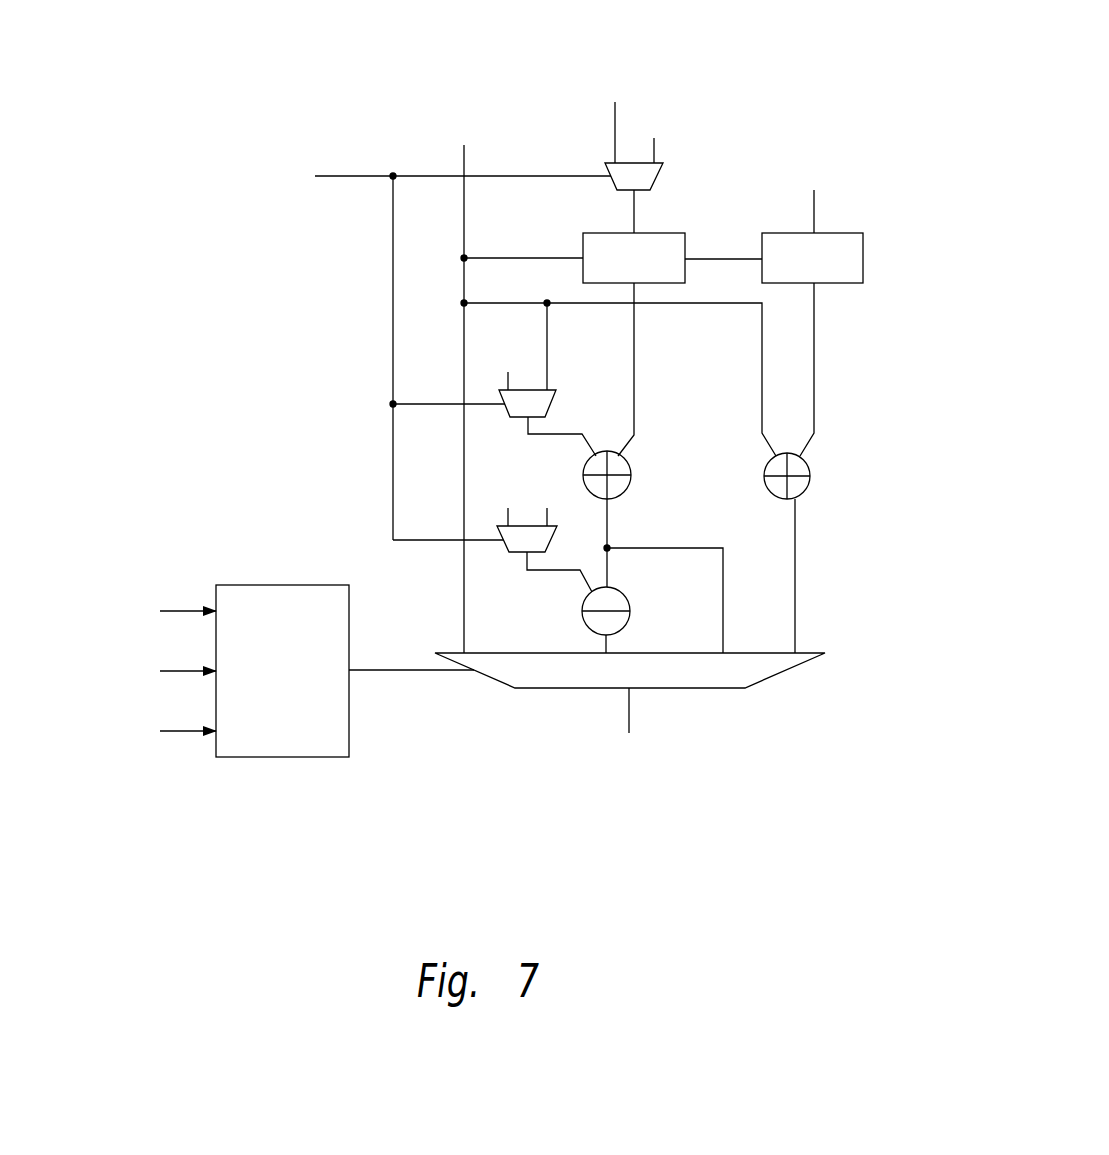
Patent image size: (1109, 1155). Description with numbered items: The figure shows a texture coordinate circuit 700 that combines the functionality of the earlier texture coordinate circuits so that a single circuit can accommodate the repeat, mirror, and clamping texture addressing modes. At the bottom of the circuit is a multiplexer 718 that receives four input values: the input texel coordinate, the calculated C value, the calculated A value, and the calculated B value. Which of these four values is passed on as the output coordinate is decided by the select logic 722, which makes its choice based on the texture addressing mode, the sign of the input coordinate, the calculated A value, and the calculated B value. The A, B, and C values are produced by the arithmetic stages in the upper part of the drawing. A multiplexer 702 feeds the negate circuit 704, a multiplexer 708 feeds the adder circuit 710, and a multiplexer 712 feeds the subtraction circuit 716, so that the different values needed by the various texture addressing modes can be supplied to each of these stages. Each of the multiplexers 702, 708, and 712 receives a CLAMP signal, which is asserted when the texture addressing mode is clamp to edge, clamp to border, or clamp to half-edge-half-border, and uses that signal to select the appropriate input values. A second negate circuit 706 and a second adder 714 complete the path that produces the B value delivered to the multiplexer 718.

The texture coordinate circuit 700 is at (793, 53).
The multiplexer 702 is at (605, 163).
The negate circuit 704 is at (672, 233).
The negate unit 706 is at (850, 233).
The multiplexer 708 is at (557, 406).
The adder circuit 710 is at (632, 466).
The multiplexer 712 is at (505, 553).
The adder B 714 is at (810, 467).
The subtraction circuit 716 is at (630, 594).
The multiplexer 718 is at (790, 672).
The select logic 722 is at (349, 740).